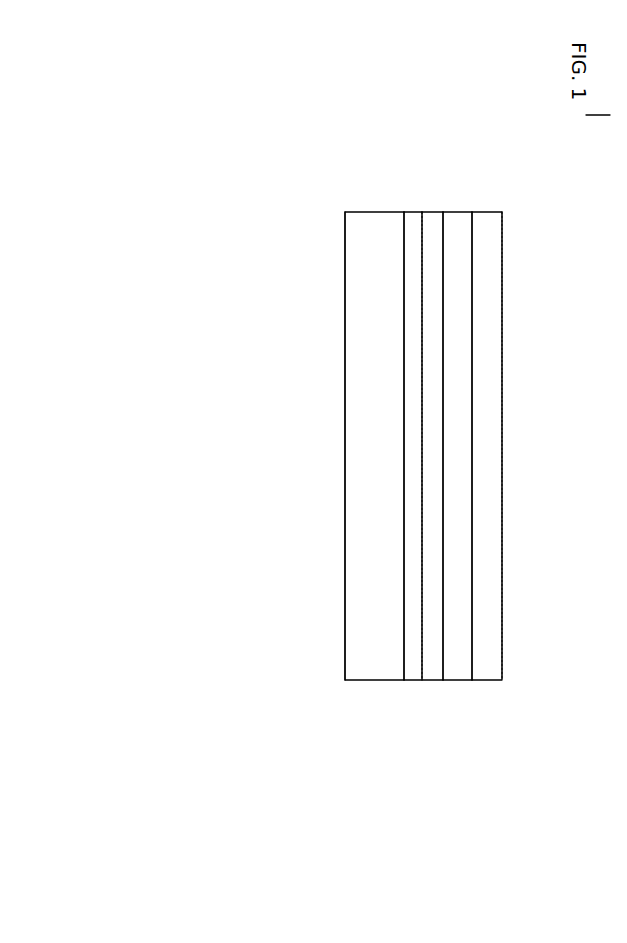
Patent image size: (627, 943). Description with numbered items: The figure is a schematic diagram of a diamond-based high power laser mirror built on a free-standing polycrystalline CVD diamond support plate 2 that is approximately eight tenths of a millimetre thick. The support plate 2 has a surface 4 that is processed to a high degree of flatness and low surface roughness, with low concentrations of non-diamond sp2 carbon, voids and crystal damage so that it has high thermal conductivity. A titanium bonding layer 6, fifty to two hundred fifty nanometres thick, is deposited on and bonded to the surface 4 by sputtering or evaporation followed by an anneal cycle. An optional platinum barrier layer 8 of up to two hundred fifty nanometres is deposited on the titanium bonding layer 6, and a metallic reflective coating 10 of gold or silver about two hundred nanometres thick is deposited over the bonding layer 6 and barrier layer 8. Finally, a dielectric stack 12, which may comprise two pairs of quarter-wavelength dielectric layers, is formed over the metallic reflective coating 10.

The polycrystalline CVD diamond support plate 2 is at (363, 633).
The surface 4 is at (405, 483).
The titanium bonding layer 6 is at (403, 762).
The barrier layer 8 is at (472, 790).
The metallic reflective coating 10 is at (457, 230).
The dielectric stack 12 is at (537, 762).